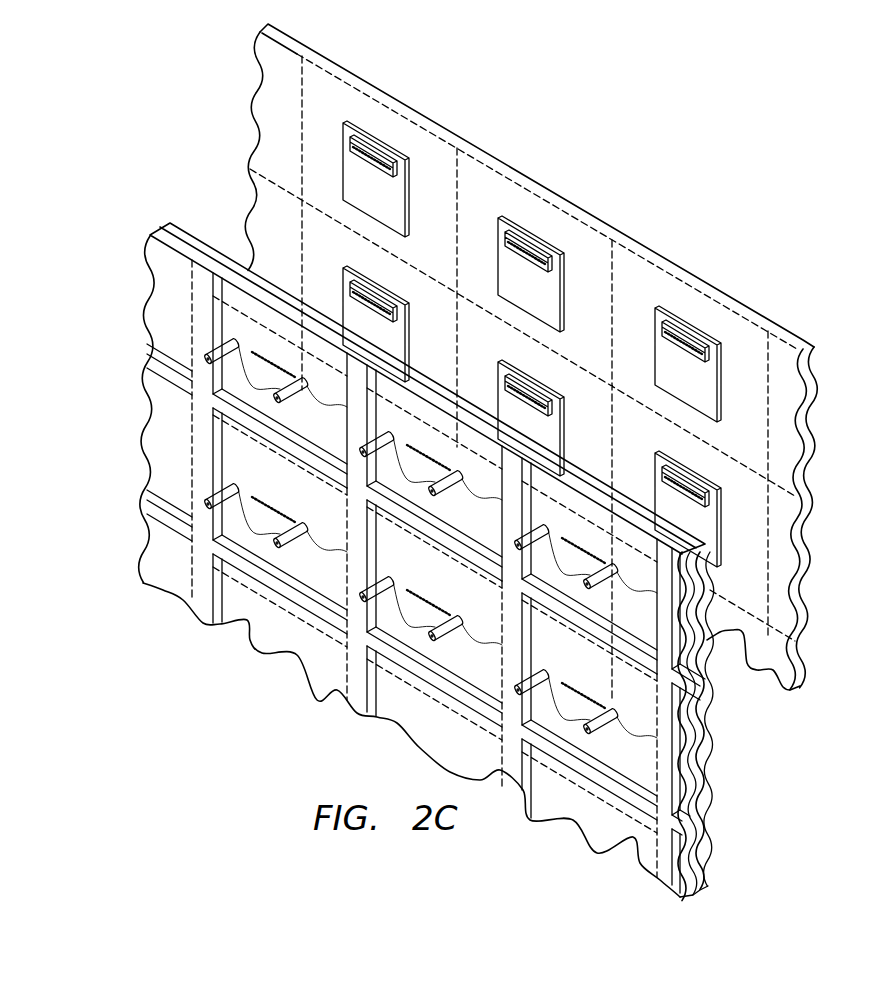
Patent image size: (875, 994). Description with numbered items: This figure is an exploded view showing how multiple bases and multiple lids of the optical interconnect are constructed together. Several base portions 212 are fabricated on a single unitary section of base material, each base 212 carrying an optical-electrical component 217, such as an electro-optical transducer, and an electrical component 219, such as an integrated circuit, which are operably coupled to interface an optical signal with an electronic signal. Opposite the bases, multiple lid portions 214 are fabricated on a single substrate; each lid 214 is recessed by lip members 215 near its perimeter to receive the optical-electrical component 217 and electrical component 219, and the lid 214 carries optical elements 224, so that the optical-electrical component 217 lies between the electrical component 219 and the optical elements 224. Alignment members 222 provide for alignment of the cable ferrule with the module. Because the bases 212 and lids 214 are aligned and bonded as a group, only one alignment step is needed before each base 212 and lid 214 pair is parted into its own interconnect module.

The base portion 212 is at (733, 302).
The lid portion 214 is at (698, 867).
The lip members 215 is at (707, 679).
The optical-electrical component 217 is at (548, 250).
The electrical component 219 is at (502, 218).
The alignment members 222 is at (216, 491).
The optical elements 224 is at (252, 352).